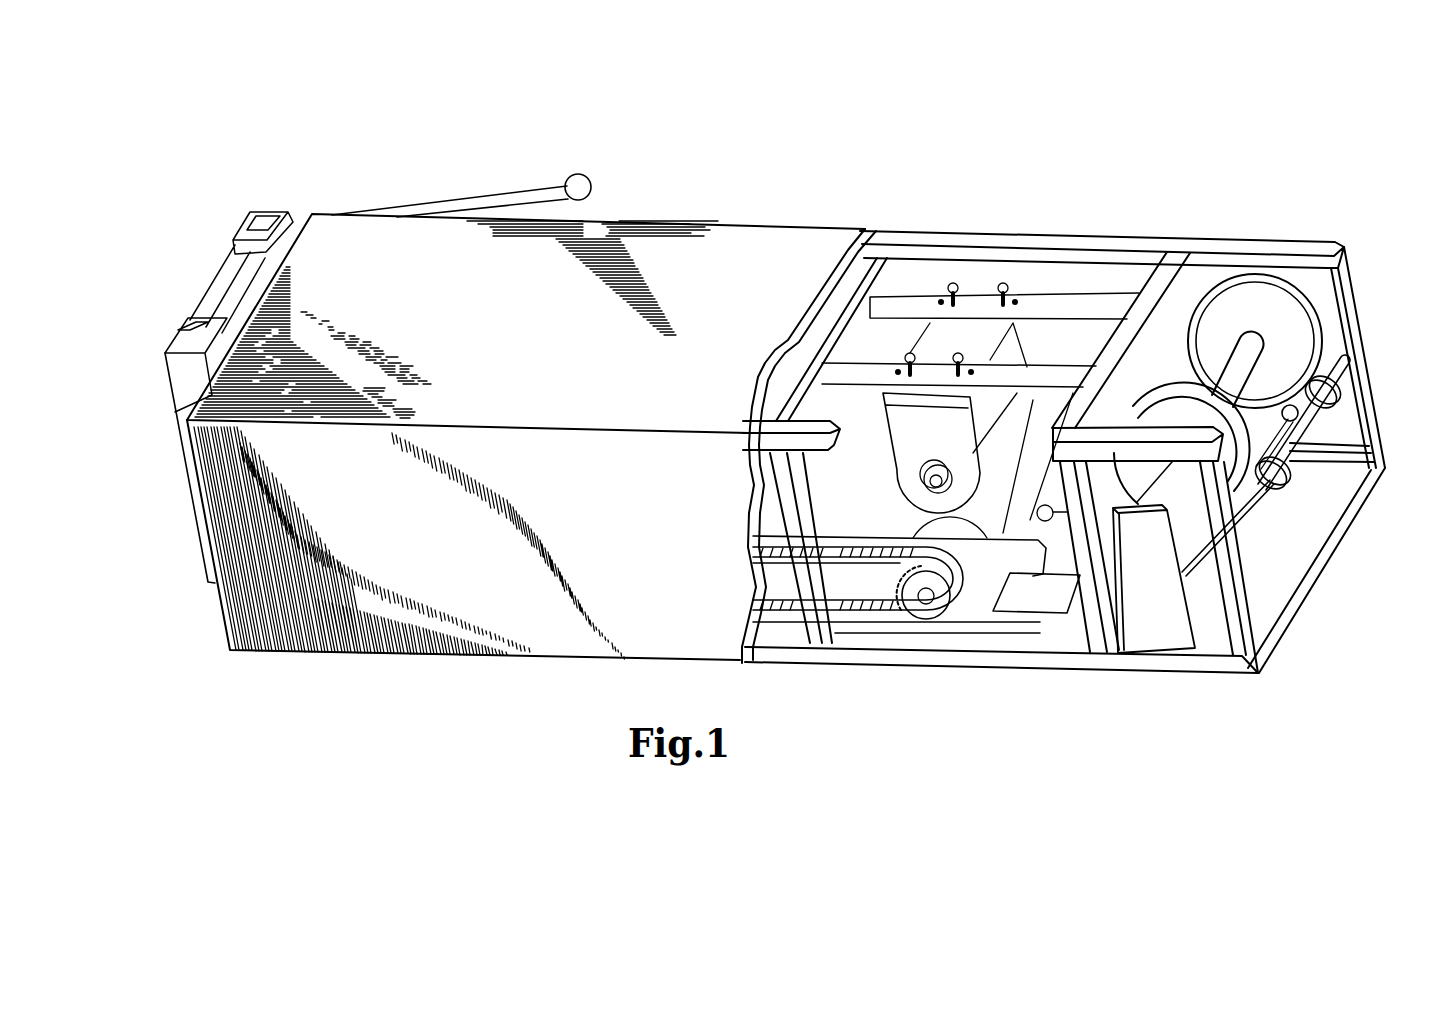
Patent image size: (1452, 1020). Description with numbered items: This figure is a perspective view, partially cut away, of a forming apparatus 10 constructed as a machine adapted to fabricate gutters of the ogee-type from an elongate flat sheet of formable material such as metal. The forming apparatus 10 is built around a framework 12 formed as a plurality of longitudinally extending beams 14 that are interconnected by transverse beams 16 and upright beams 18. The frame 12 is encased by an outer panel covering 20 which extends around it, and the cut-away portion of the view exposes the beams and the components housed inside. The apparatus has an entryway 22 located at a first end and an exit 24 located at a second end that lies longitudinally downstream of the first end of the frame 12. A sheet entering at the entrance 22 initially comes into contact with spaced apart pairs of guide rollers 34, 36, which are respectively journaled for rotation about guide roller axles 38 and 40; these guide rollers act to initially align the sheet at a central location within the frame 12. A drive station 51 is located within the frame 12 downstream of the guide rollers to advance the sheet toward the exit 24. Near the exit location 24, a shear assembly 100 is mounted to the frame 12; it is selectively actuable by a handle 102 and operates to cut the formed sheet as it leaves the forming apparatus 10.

The forming apparatus 10 is at (812, 140).
The framework 12 is at (1050, 444).
The longitudinally extending beams 14 is at (1293, 243).
The transverse beams 16 is at (850, 338).
The upright beams 18 is at (1352, 322).
The outer panel covering 20 is at (413, 325).
The entryway 22 is at (1327, 470).
The exit 24 is at (198, 566).
The guide roller 34 is at (1293, 491).
The guide roller 36 is at (1245, 297).
The guide roller axle 38 is at (1317, 428).
The guide roller axle 40 is at (1232, 360).
The drive station 51 is at (866, 488).
The shear assembly 100 is at (192, 268).
The handle 102 is at (527, 188).